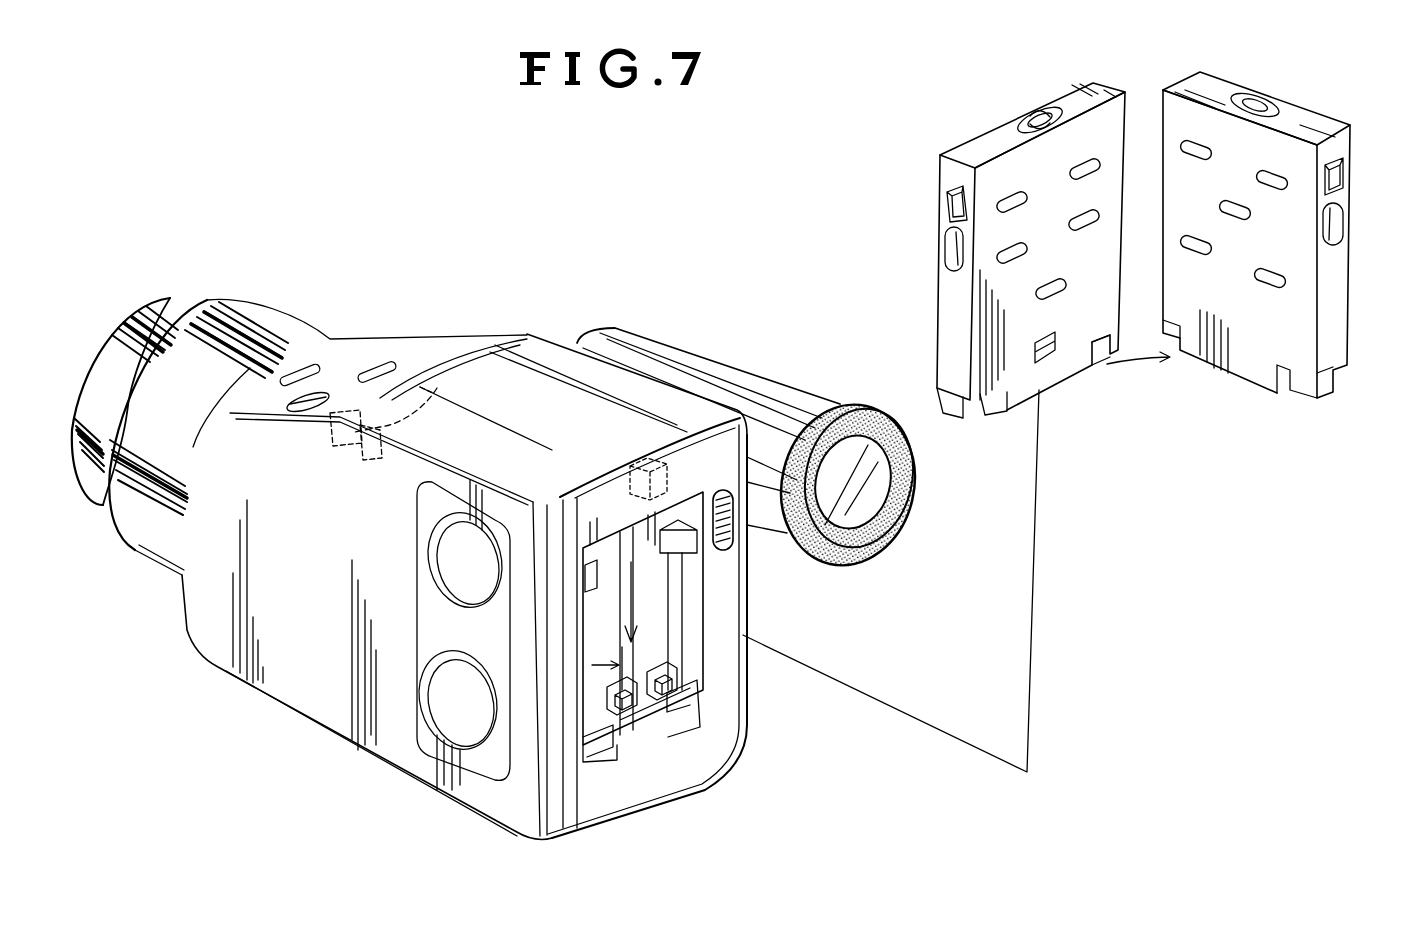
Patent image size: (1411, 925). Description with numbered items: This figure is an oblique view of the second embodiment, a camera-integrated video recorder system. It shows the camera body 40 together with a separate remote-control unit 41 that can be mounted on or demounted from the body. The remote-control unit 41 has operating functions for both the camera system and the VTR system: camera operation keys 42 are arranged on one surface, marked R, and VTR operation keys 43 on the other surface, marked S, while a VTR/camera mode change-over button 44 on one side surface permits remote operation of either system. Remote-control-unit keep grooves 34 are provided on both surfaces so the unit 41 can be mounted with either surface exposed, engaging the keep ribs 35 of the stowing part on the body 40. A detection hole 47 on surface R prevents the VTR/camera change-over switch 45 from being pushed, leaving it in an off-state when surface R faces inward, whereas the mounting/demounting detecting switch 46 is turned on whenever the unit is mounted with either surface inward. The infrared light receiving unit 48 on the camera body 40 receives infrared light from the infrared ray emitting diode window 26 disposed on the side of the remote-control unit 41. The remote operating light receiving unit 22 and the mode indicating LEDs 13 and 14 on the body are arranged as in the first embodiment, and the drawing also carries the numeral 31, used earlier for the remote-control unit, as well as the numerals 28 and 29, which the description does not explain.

The mode indicating LED 13 is at (318, 368).
The mode indicating LED 14 is at (391, 367).
The remote operating light receiving unit 22 is at (437, 388).
The infrared ray emitting diode window 26 is at (1052, 110).
The connector block 28 is at (682, 550).
The eject slide switch 29 is at (730, 548).
The remote-control unit 31 is at (946, 200).
The remote-control-unit keep grooves 34 is at (963, 412).
The keep ribs 35 is at (688, 713).
The camera body 40 is at (531, 392).
The remote-control unit 41 is at (1142, 245).
The camera operation keys 42 is at (1120, 218).
The VTR operation keys 43 is at (1346, 180).
The VTR/camera mode change-over button 44 is at (947, 248).
The VTR/camera change-over switch 45 is at (628, 700).
The remote-control-unit mounting/demounting detecting switch 46 is at (680, 676).
The detection hole 47 is at (1047, 363).
The infrared light receiving unit 48 is at (673, 460).